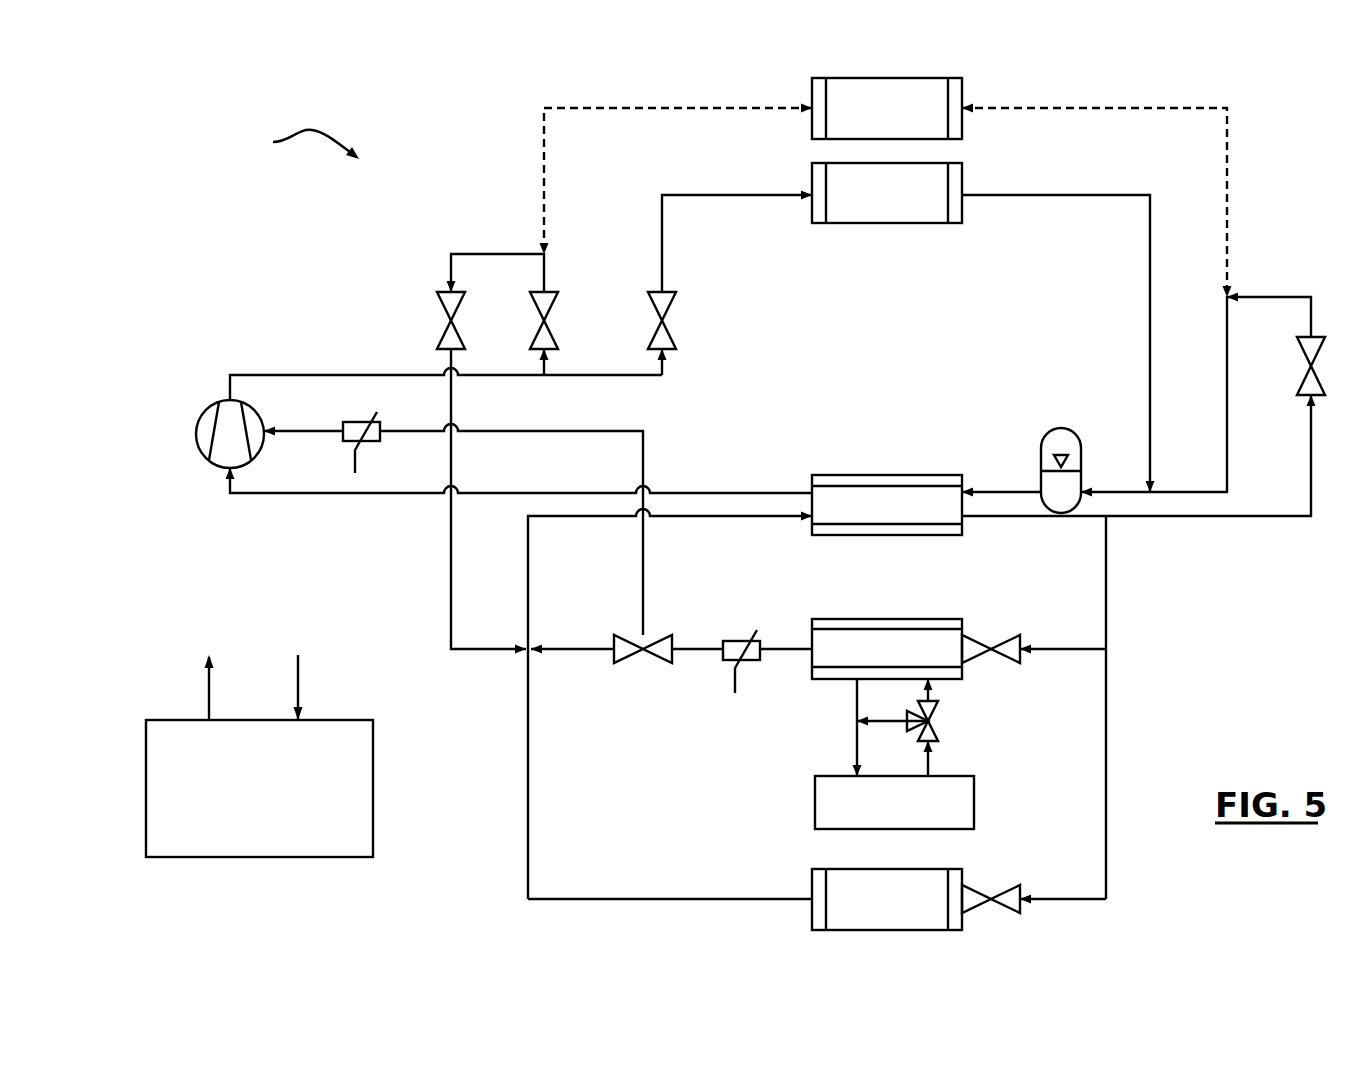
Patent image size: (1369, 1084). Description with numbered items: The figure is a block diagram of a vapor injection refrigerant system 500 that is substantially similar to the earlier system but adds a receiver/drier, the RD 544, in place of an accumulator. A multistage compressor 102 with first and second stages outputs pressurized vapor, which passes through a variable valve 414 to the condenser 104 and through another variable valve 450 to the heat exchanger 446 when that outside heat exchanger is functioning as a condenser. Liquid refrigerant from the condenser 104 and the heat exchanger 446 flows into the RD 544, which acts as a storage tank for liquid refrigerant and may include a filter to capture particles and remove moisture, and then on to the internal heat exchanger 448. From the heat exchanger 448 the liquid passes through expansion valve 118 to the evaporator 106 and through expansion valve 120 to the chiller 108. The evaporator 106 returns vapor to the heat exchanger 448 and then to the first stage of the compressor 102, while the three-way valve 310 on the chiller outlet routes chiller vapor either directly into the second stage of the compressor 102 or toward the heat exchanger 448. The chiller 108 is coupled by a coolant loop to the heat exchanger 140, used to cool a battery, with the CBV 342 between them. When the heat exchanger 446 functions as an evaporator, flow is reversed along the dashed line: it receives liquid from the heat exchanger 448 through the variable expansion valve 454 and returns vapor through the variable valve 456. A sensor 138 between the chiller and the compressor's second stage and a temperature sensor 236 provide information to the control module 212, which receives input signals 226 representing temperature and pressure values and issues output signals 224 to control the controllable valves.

The vapor injection refrigerant system 500 is at (298, 144).
The multistage compressor 102 is at (200, 415).
The sensor 138 is at (343, 438).
The valve 456 is at (460, 338).
The valve 450 is at (557, 303).
The valve 414 is at (655, 338).
The heat exchanger 446 is at (963, 92).
The heat exchanger 104 is at (963, 170).
The heat exchanger 448 is at (868, 474).
The RD 544 is at (1042, 449).
The valve 454 is at (1302, 393).
The three-way valve 310 is at (660, 657).
The sensor 236 is at (743, 640).
The chiller 108 is at (903, 618).
The valve 120 is at (972, 638).
The CBV 342 is at (935, 713).
The heat exchanger 140 is at (975, 809).
The evaporator 106 is at (815, 867).
The valve 118 is at (977, 889).
The control module 212 is at (145, 752).
The output signals 224 is at (188, 687).
The input signals 226 is at (321, 687).